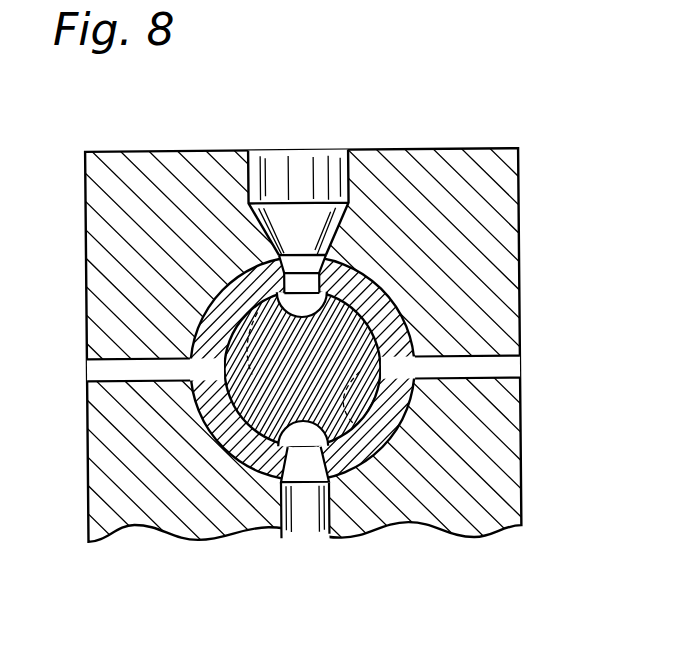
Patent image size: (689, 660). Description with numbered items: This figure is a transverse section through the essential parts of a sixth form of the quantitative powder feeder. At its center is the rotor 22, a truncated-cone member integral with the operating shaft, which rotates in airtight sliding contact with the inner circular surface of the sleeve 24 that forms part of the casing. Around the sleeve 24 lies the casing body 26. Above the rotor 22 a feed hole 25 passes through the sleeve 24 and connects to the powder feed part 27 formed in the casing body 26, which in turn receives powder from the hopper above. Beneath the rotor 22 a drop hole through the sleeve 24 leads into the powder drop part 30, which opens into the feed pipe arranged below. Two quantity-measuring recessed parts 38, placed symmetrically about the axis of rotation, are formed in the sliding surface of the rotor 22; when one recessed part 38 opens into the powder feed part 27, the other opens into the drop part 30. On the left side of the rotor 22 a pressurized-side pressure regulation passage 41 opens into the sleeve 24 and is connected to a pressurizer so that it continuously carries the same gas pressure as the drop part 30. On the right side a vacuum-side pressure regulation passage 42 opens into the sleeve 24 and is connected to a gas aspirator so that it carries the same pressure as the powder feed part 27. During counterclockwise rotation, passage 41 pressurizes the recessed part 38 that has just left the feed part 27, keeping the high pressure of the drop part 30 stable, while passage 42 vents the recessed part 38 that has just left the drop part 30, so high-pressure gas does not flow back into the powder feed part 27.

The rotor 22 is at (335, 477).
The sleeve 24 is at (355, 268).
The feed hole 25 is at (293, 283).
The casing body 26 is at (435, 180).
The powder feed part 27 is at (300, 165).
The powder drop part 30 is at (307, 512).
The quantity-measuring recessed part 38 is at (240, 296).
The pressurized-side pressure regulation passage 41 is at (165, 357).
The vacuum-side pressure regulation passage 42 is at (452, 382).